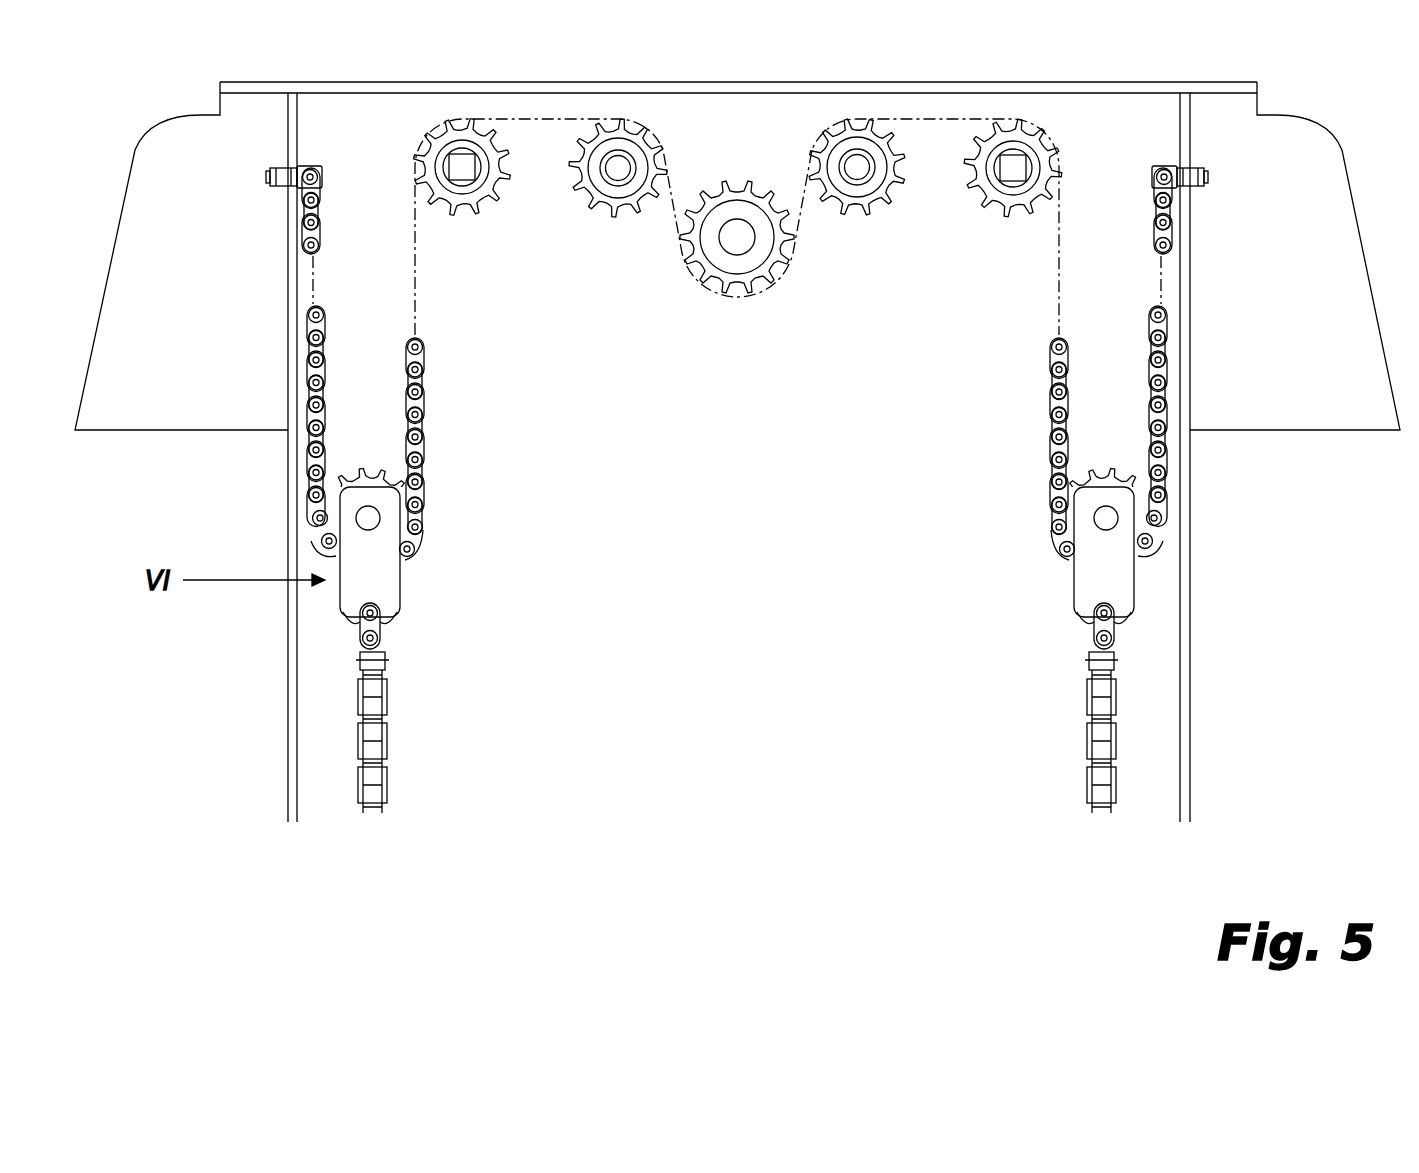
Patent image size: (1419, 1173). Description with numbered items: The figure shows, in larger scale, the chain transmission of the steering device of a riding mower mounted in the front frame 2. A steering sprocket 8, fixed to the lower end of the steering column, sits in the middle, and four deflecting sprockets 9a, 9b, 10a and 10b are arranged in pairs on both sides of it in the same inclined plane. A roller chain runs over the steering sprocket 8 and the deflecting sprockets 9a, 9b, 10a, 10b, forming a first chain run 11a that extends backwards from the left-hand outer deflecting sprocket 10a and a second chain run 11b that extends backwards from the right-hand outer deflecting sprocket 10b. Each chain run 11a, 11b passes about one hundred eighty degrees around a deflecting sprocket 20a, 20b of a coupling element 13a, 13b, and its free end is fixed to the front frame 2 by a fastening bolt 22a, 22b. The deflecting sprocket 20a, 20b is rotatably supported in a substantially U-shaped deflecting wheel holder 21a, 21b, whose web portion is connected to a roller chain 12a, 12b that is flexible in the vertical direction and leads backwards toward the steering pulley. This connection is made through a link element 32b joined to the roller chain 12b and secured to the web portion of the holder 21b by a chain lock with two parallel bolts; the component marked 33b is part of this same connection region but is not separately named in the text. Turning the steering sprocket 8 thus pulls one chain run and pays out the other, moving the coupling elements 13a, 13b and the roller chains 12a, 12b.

The front frame 2 is at (288, 690).
The steering sprocket 8 is at (737, 300).
The deflecting sprocket 9a is at (858, 220).
The deflecting sprocket 9b is at (611, 220).
The left-hand outer deflecting sprocket 10a is at (1005, 220).
The right-hand outer deflecting sprocket 10b is at (460, 220).
The first chain run 11a is at (1050, 408).
The second chain run 11b is at (428, 396).
The roller chain 12a is at (1082, 730).
The roller chain 12b is at (394, 732).
The coupling element 13a is at (1067, 585).
The coupling element 13b is at (405, 580).
The deflecting sprocket 20a is at (1110, 470).
The deflecting sprocket 20b is at (363, 470).
The deflecting wheel holder 21a is at (1110, 586).
The deflecting wheel holder 21b is at (348, 602).
The fastening bolt 22a is at (1152, 176).
The fastening bolt 22b is at (322, 177).
The link element 32b is at (374, 667).
The link plate 33b is at (378, 630).